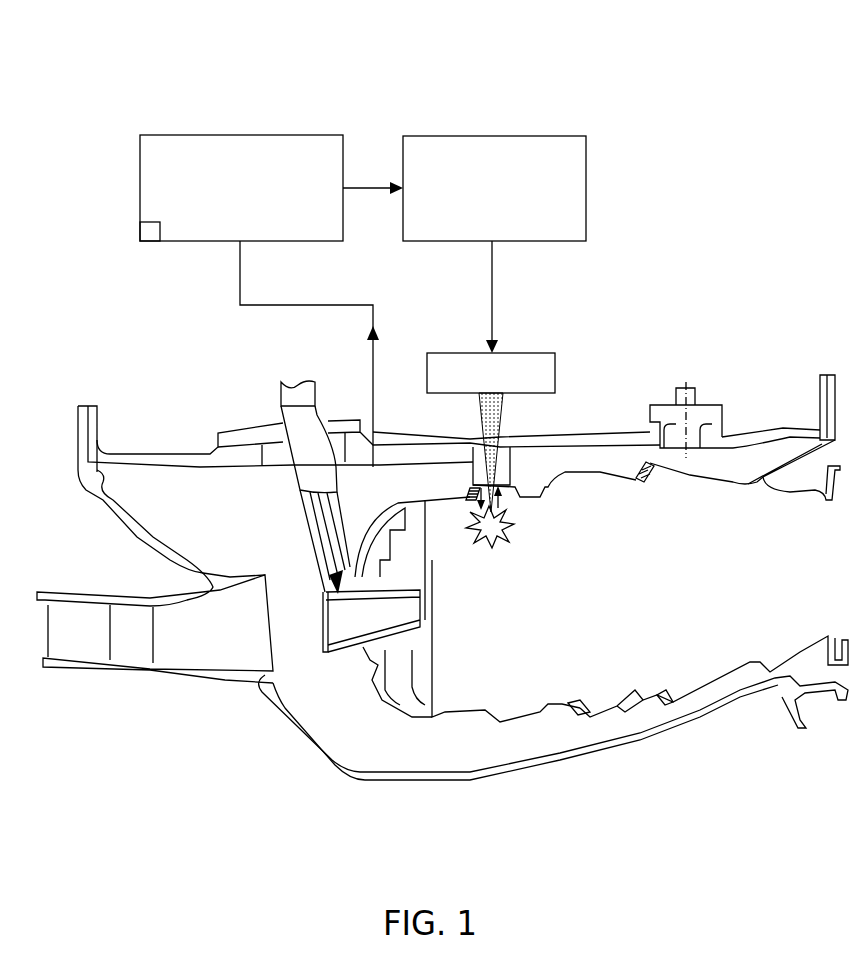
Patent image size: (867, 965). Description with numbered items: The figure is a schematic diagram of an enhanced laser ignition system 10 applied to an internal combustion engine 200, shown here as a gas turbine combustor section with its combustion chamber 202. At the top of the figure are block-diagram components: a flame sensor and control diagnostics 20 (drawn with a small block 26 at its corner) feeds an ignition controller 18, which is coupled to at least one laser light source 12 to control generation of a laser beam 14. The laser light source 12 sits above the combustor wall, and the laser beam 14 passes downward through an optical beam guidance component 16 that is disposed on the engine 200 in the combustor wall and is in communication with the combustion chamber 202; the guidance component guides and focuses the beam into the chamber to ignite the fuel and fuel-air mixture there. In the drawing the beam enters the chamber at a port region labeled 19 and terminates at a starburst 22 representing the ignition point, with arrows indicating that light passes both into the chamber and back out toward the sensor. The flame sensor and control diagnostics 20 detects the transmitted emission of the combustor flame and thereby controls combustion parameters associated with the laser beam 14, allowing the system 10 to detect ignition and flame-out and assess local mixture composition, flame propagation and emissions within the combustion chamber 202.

The laser ignition system 10 is at (672, 43).
The laser light source 12 is at (555, 378).
The laser beam 14 is at (480, 415).
The optical beam guidance component 16 is at (508, 462).
The ignition controller 18 is at (586, 188).
The igniter port 19 is at (475, 482).
The flame sensor and control diagnostics 20 is at (140, 172).
The spark / ignition point 22 is at (505, 528).
The sensor 26 is at (140, 235).
The internal combustion engine 200 is at (276, 825).
The combustion chamber 202 is at (640, 748).